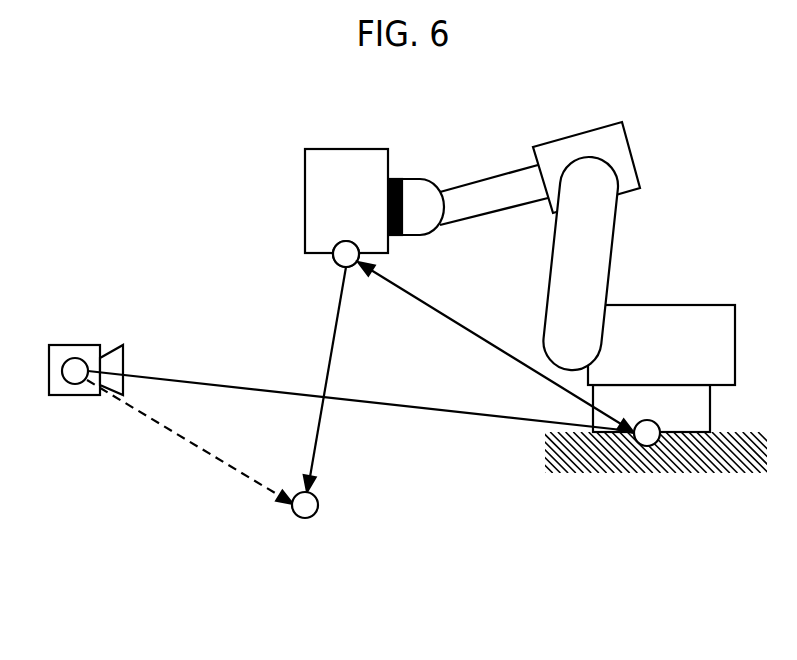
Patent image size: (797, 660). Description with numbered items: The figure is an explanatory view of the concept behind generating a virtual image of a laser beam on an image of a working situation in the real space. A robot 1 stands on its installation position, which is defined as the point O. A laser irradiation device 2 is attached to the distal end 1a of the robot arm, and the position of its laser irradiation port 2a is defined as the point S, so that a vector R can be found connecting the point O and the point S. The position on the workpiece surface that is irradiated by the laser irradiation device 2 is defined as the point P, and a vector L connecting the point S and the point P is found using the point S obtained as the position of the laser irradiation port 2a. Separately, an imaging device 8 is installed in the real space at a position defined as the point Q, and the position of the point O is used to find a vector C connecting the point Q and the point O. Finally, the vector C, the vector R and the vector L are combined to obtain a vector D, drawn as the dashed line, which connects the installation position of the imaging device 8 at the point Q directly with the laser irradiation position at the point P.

The robot 1 is at (627, 250).
The distal end of the robot arm 1a is at (405, 202).
The laser irradiation device 2 is at (343, 149).
The laser irradiation port 2a is at (338, 263).
The imaging device 8 is at (96, 345).
The point S is at (341, 247).
The point P is at (306, 518).
The point O is at (647, 447).
The point Q is at (75, 358).
The vector L is at (331, 350).
The vector R is at (468, 330).
The vector C is at (404, 406).
The vector D is at (203, 449).